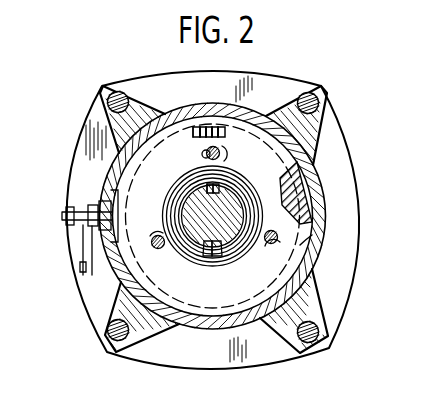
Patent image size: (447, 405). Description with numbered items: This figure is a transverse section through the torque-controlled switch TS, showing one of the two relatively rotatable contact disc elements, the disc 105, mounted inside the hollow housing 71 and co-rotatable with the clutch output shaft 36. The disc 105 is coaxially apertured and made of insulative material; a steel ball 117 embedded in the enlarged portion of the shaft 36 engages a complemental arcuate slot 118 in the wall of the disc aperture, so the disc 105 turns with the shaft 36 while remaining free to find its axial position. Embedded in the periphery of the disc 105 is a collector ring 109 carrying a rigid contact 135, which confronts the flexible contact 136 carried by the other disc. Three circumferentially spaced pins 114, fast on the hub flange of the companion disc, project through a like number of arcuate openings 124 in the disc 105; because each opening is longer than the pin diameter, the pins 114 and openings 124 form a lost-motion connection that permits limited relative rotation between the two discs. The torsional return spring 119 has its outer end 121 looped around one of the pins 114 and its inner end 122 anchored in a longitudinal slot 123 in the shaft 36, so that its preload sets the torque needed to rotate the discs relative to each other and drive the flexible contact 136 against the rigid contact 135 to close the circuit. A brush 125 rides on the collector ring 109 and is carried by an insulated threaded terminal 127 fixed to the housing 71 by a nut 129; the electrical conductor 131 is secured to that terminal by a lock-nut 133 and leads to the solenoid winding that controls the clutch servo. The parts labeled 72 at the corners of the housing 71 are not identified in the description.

The clutch output shaft 36 is at (203, 236).
The housing 71 is at (322, 213).
The mounting bolts 72 is at (107, 101).
The contact disc element 105 is at (128, 202).
The collector ring 109 is at (302, 186).
The pins 114 is at (223, 157).
The steel ball 117 is at (206, 258).
The arcuate slot 118 is at (219, 258).
The torsional spring 119 is at (188, 263).
The outer end of spring 121 is at (202, 153).
The inner end of spring 122 is at (197, 198).
The longitudinal slot 123 is at (228, 200).
The arcuate openings 124 is at (151, 244).
The brush 125 is at (112, 194).
The insulated threaded terminal 127 is at (63, 215).
The nuts 129 is at (89, 259).
The electrical conductor 131 is at (80, 269).
The lock-nuts 133 is at (76, 230).
The rigid contact 135 is at (218, 126).
The flexible contact 136 is at (203, 126).
The torque-controlled switch TS is at (306, 256).